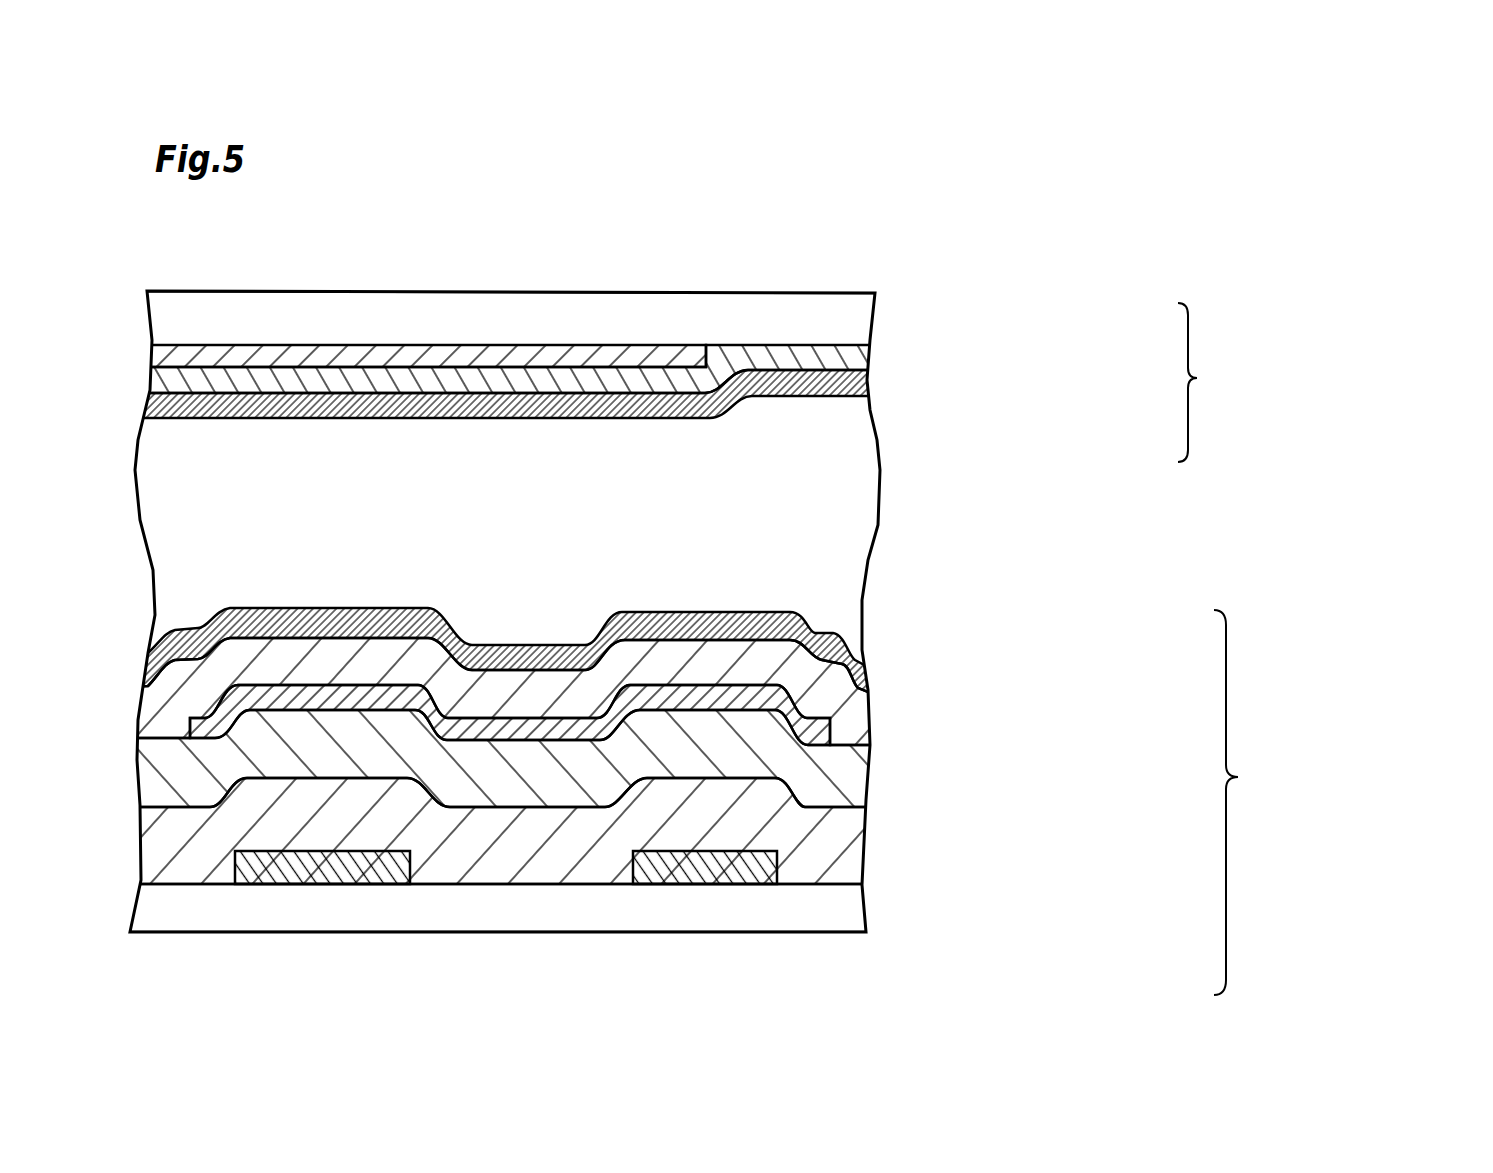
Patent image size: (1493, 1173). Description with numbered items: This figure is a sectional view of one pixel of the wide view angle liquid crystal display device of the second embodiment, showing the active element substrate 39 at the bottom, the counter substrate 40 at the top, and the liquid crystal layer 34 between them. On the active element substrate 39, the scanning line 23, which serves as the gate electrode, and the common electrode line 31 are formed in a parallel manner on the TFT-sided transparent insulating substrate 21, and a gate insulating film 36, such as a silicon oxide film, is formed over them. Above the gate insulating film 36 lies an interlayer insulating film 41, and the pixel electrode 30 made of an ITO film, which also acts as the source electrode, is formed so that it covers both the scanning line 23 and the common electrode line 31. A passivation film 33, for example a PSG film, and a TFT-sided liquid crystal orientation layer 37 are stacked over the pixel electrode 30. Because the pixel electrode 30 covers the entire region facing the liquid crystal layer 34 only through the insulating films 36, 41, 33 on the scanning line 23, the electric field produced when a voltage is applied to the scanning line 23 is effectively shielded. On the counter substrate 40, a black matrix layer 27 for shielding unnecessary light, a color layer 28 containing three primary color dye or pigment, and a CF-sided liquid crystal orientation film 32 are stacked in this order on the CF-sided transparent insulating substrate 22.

The transparent insulating substrate 21 is at (817, 918).
The CF-sided transparent insulating substrate 22 is at (573, 303).
The scanning line 23 is at (295, 862).
The black matrix layer 27 is at (260, 352).
The color layer 28 is at (865, 365).
The pixel electrode 30 is at (777, 693).
The common electrode line 31 is at (646, 872).
The CF-sided liquid crystal orientation film 32 is at (865, 382).
The passivation film 33 is at (858, 706).
The liquid crystal layer 34 is at (860, 524).
The gate insulating film 36 is at (859, 831).
The TFT-sided liquid crystal orientation layer 37 is at (869, 674).
The active element substrate 39 is at (790, 770).
The counter substrate 40 is at (790, 347).
The interlayer insulating film 41 is at (842, 765).